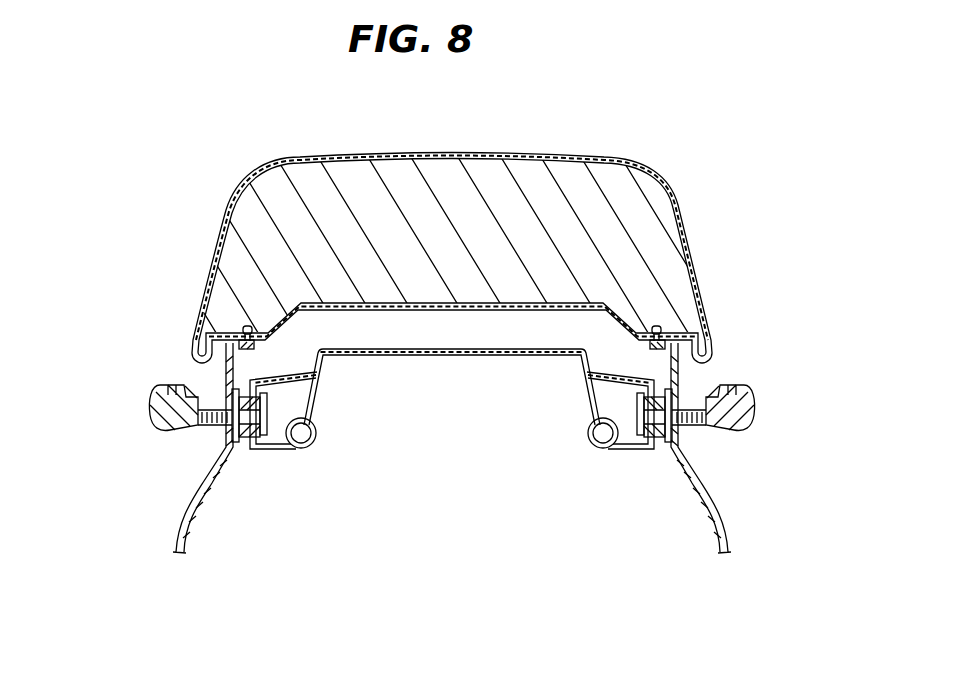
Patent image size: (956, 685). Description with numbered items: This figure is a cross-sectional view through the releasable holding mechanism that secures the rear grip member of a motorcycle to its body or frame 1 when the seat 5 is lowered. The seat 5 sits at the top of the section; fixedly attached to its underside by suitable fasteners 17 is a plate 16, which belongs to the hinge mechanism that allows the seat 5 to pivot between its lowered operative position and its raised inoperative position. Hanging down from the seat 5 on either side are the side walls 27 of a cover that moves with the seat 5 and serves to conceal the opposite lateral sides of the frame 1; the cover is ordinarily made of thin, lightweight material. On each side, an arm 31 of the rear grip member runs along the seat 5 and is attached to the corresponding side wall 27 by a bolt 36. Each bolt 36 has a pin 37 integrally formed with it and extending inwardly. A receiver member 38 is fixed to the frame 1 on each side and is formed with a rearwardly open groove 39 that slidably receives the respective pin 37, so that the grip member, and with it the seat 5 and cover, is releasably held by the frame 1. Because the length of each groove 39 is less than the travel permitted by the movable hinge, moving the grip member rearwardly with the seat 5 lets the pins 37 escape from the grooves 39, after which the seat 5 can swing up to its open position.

The seat 5 is at (337, 154).
The fasteners 17 is at (258, 344).
The plate 16 is at (444, 310).
The frame 1 is at (312, 448).
The pins 37 is at (312, 406).
The side walls 27 is at (177, 535).
The arms 31 is at (152, 388).
The bolts 36 is at (197, 430).
The receiver member 38 is at (243, 394).
The groove 39 is at (242, 447).